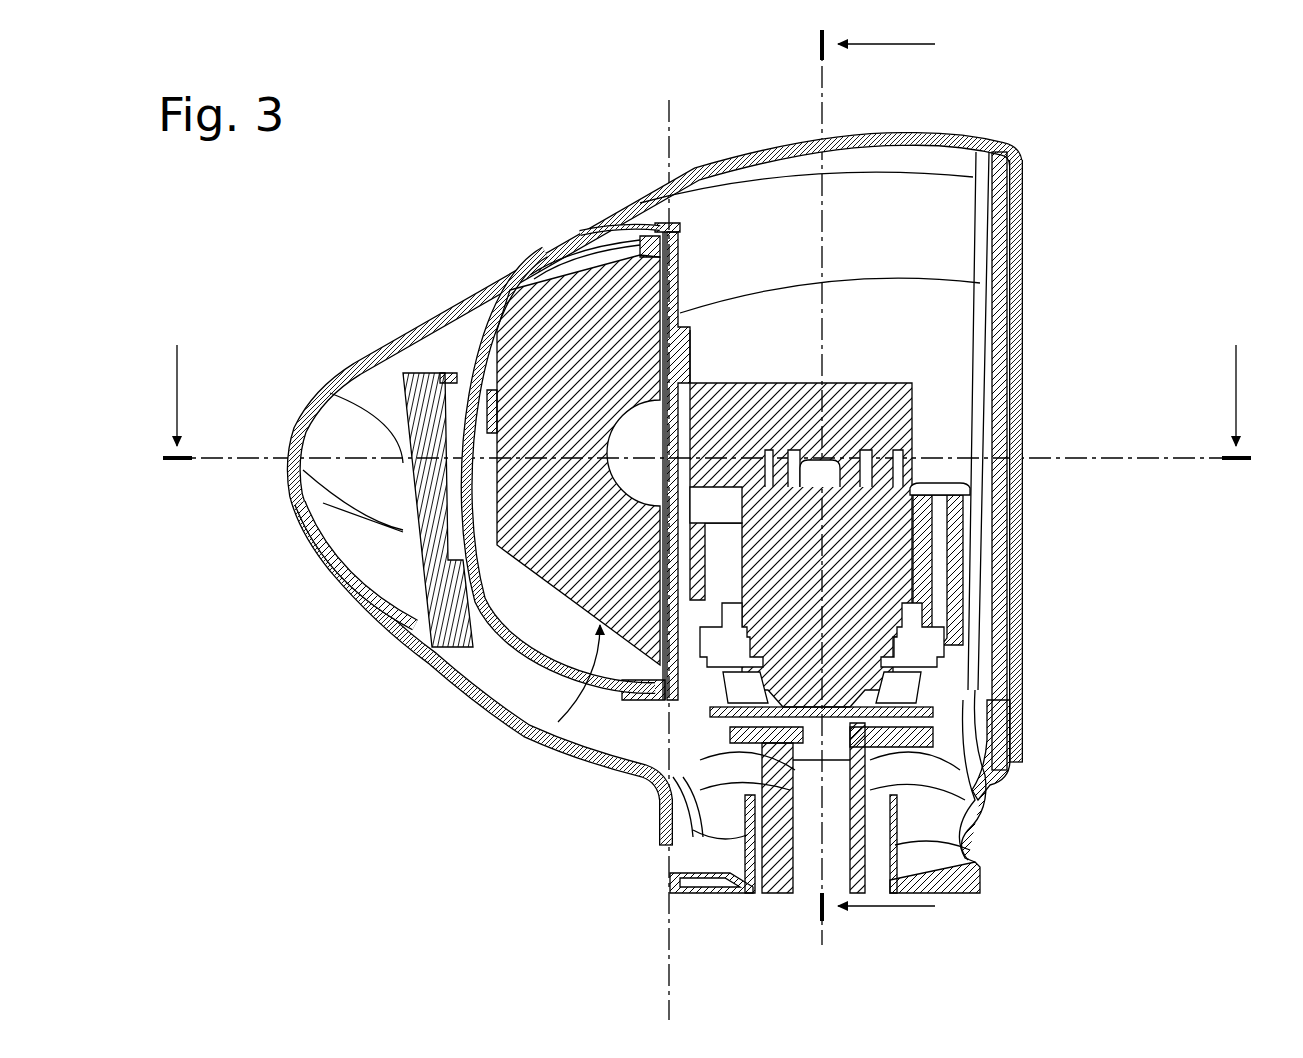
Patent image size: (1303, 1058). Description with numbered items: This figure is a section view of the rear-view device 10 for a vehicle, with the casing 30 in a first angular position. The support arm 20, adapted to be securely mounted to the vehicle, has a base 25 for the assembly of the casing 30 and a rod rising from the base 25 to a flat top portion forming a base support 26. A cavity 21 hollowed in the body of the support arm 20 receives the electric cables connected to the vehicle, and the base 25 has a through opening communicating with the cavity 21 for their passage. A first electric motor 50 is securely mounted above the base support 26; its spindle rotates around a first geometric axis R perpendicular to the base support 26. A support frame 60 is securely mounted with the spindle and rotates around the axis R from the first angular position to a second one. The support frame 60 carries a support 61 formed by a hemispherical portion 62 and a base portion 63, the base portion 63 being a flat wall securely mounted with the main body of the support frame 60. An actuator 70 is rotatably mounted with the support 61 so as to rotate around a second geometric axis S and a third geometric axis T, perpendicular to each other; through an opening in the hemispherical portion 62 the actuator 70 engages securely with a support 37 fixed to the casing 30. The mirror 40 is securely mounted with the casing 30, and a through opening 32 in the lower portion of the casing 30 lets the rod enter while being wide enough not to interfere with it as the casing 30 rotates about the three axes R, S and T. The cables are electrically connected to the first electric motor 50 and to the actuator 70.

The rear-view device 10 is at (482, 143).
The support arm 20 is at (718, 892).
The cavity 21 is at (821, 845).
The base 25 is at (966, 858).
The base support 26 is at (1001, 740).
The casing 30 is at (918, 132).
The through opening 32 is at (688, 851).
The support 37 is at (404, 378).
The mirror 40 is at (1023, 262).
The first electric motor 50 is at (866, 577).
The support frame 60 is at (1001, 380).
The support 61 is at (642, 238).
The hemispherical portion 62 is at (588, 232).
The base portion 63 is at (679, 272).
The actuator 70 is at (552, 728).
The second geometric axis S is at (710, 420).
The third geometric axis T is at (670, 908).
The first geometric axis R is at (811, 871).